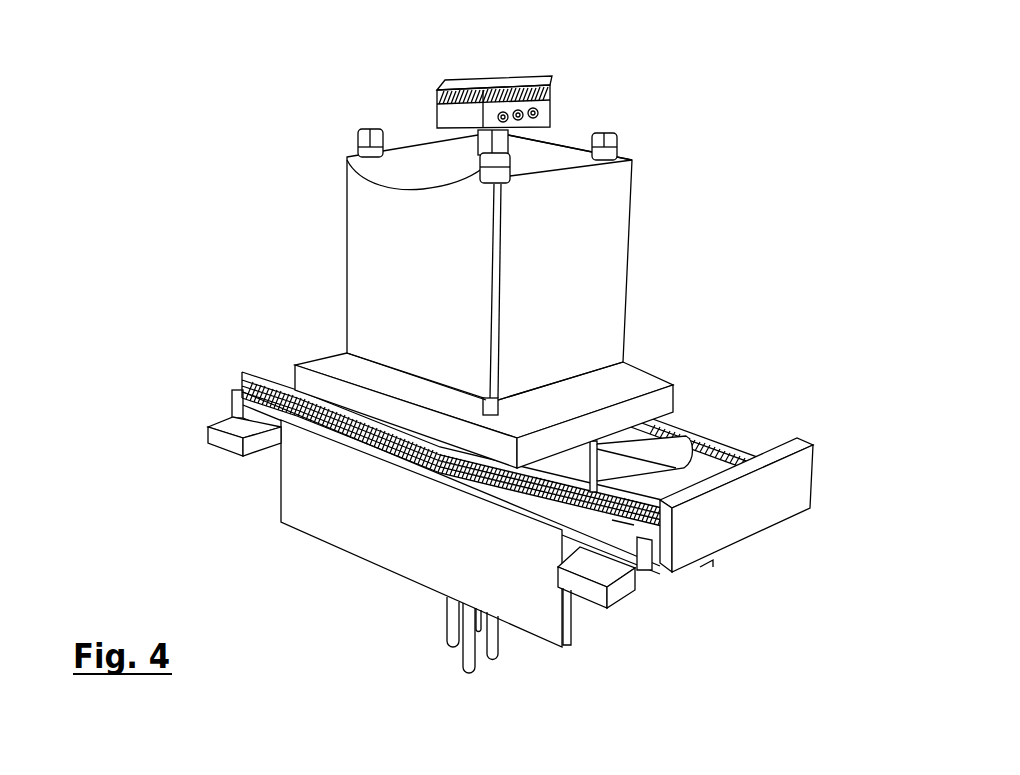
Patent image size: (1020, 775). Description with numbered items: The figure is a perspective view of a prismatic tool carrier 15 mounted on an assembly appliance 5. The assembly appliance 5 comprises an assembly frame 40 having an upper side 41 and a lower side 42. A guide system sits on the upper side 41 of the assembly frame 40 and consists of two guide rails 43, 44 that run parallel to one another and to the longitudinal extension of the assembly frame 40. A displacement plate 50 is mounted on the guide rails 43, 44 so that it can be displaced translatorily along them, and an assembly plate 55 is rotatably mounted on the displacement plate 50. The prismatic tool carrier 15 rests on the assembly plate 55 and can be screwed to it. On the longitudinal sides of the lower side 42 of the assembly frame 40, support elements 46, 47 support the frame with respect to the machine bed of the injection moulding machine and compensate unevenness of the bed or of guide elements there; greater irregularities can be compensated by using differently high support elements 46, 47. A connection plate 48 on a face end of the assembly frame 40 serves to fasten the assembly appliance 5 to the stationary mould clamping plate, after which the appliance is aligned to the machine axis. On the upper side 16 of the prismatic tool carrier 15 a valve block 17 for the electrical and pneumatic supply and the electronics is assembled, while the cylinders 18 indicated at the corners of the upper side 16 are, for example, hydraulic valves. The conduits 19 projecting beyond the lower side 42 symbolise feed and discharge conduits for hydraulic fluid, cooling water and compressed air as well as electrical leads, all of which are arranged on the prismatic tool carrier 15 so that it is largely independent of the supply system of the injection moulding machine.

The assembly appliance 5 is at (224, 492).
The prismatic tool carrier 15 is at (559, 232).
The upper side of the prismatic tool carrier 16 is at (553, 156).
The valve block 17 is at (432, 108).
The cylinders 18 is at (358, 150).
The conduits 19 is at (410, 637).
The assembly frame 40 is at (238, 405).
The upper side of the assembly frame 41 is at (668, 478).
The lower side of the assembly frame 42 is at (637, 577).
The guide rail 43 is at (622, 522).
The guide rail 44 is at (720, 430).
The support element 46 is at (207, 441).
The support element 47 is at (583, 637).
The connection plate 48 is at (800, 472).
The displacement plate 50 is at (680, 393).
The assembly plate 55 is at (625, 362).